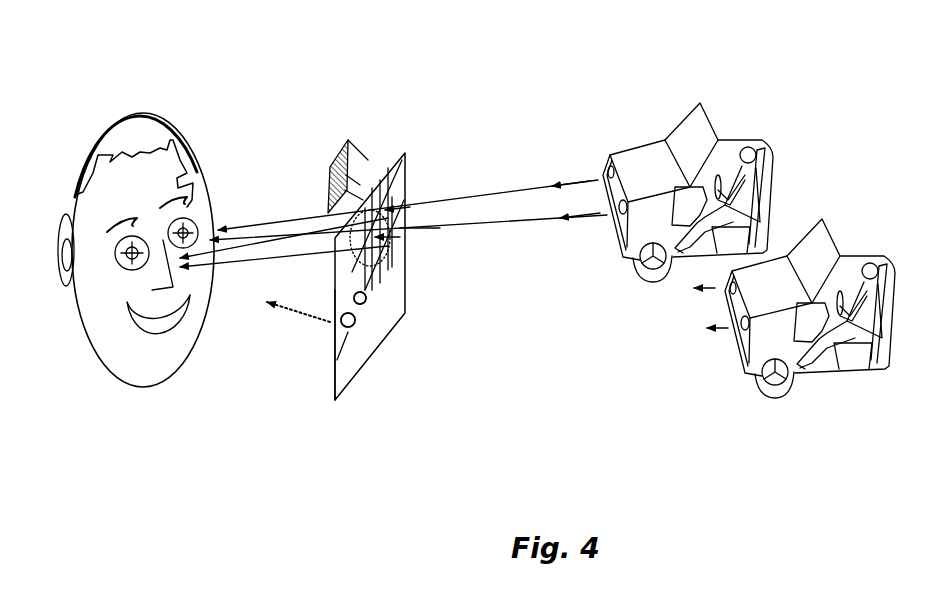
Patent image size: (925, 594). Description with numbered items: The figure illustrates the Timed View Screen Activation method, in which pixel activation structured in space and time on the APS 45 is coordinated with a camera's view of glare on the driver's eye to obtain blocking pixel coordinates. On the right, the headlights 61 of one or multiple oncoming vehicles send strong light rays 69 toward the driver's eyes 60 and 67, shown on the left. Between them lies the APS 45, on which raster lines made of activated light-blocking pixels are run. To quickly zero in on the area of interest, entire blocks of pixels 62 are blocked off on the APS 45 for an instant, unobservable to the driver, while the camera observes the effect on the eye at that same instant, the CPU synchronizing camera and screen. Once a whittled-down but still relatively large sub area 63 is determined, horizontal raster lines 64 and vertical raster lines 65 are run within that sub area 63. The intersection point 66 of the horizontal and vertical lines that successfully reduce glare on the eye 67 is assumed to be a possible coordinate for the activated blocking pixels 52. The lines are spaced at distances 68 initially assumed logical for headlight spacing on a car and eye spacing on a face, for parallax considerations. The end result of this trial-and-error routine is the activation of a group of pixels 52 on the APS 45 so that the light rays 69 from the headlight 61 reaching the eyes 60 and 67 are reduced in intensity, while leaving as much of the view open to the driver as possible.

The APS 45 is at (373, 347).
The activated blocking pixels 52 is at (340, 357).
The driver's eye 60 is at (179, 218).
The oncoming headlights 61 is at (603, 160).
The blocks of pixels 62 is at (330, 147).
The sub area 63 is at (395, 237).
The horizontal raster lines 64 is at (392, 218).
The vertical raster lines 65 is at (370, 193).
The intersection point 66 is at (440, 228).
The eye 67 is at (130, 253).
The distances 68 is at (366, 272).
The light rays 69 is at (295, 317).